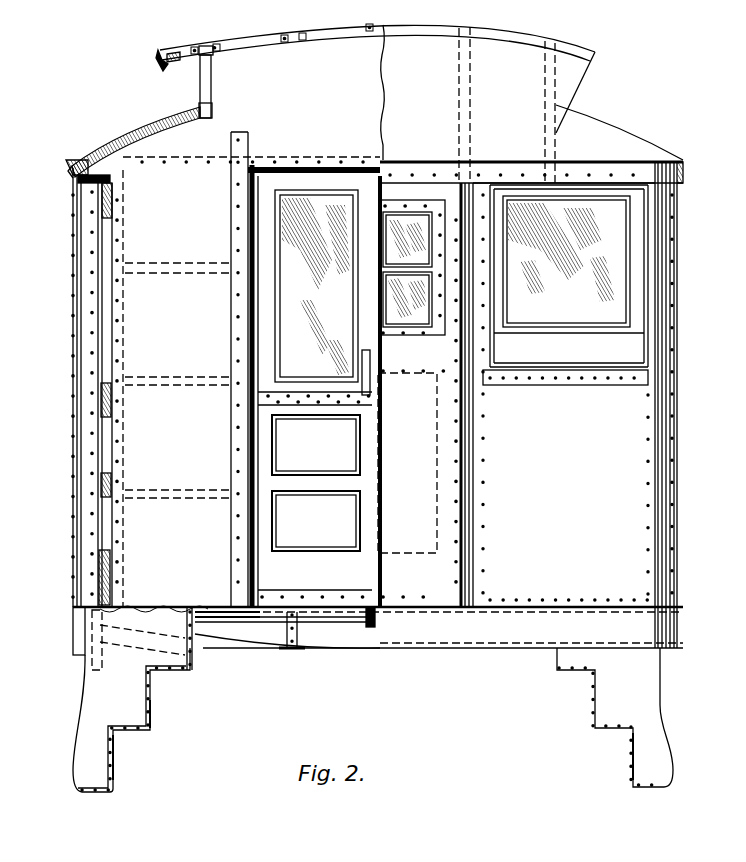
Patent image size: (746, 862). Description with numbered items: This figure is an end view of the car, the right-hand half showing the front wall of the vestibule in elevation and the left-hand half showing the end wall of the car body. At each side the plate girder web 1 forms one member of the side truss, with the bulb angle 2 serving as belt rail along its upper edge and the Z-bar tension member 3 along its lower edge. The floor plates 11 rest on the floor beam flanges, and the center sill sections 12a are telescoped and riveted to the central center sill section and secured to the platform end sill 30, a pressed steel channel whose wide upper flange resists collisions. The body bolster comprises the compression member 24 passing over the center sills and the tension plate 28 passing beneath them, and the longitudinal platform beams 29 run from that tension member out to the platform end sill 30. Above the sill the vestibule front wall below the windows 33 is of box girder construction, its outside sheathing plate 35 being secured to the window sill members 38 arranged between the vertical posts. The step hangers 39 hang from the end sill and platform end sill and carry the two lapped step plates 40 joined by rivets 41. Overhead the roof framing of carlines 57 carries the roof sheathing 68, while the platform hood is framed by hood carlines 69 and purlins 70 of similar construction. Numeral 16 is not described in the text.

The web of the plate girder 1 is at (78, 525).
The bulb angle 2 is at (72, 451).
The tension member 3 is at (78, 663).
The floor plates 11 is at (224, 607).
The center sill sections 12a is at (278, 648).
The end plate 16 is at (77, 179).
The compression member of the body bolster 24 is at (373, 613).
The tension member plate of the bolster 28 is at (348, 653).
The platform beams 29 is at (198, 657).
The platform end sill 30 is at (378, 627).
The windows 33 is at (569, 276).
The outside sheathing plate 35 is at (564, 395).
The window sill members 38 is at (574, 374).
The step hangers 39 is at (373, 720).
The step plates 40 is at (149, 710).
The rivets 41 is at (114, 757).
The carlines 57 is at (338, 38).
The roof sheathing 68 is at (148, 119).
The hood carlines 69 is at (212, 80).
The hood purlins 70 is at (213, 54).